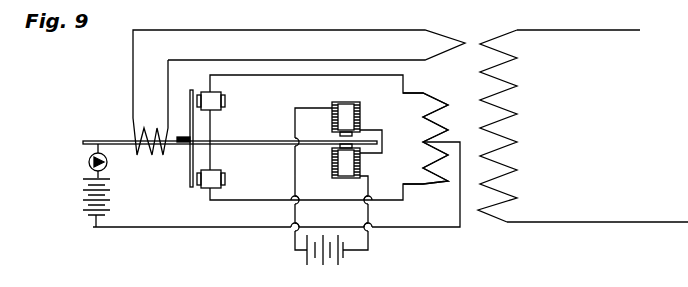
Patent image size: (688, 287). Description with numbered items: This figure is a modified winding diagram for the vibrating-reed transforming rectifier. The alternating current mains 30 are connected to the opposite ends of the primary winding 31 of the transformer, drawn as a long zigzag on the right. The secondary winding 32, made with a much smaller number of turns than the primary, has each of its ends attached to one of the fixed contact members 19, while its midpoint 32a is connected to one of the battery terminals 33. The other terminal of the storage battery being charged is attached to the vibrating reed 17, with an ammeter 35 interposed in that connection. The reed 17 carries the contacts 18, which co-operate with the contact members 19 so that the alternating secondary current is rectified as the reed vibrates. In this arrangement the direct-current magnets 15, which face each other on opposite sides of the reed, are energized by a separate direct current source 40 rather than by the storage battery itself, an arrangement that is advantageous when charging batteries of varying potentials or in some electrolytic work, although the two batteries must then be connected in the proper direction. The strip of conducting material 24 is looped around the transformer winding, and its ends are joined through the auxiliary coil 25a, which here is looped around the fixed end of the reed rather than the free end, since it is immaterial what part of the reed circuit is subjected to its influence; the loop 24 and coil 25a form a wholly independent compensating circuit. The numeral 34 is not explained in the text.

The direct-current magnets 15 is at (360, 112).
The vibrating reed 17 is at (256, 140).
The contacts 18 is at (190, 100).
The contact members 19 is at (210, 110).
The strip of conducting material 24 is at (440, 37).
The auxiliary coil 25a is at (153, 156).
The alternating current mains 30 is at (608, 31).
The primary winding 31 is at (517, 114).
The secondary winding 32 is at (428, 137).
The midpoint of the secondary winding 32a is at (447, 140).
The battery terminal 33 is at (92, 216).
The battery 34 is at (86, 178).
The ammeter 35 is at (107, 163).
The direct current source 40 is at (323, 260).